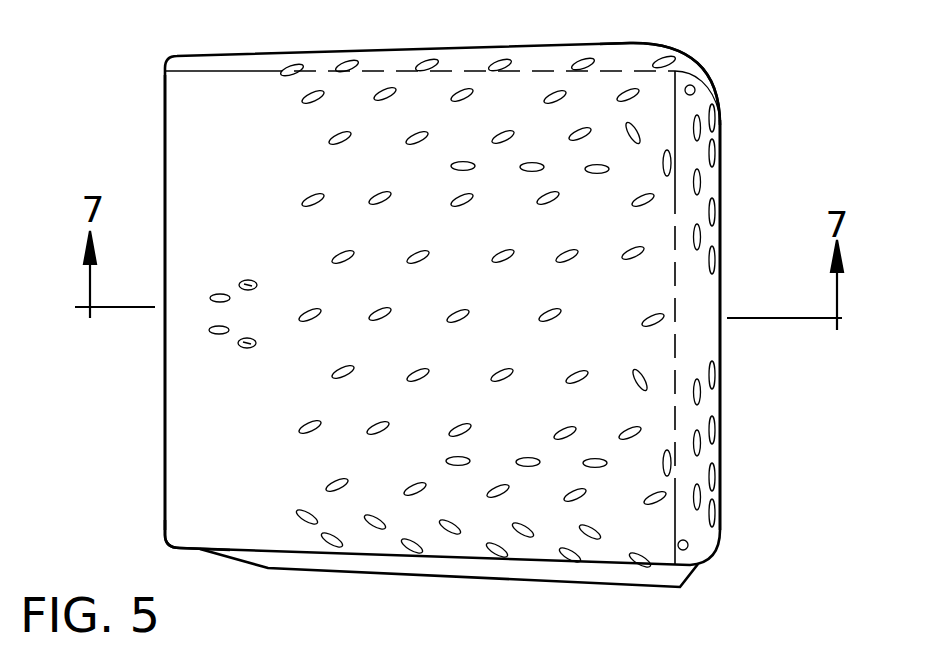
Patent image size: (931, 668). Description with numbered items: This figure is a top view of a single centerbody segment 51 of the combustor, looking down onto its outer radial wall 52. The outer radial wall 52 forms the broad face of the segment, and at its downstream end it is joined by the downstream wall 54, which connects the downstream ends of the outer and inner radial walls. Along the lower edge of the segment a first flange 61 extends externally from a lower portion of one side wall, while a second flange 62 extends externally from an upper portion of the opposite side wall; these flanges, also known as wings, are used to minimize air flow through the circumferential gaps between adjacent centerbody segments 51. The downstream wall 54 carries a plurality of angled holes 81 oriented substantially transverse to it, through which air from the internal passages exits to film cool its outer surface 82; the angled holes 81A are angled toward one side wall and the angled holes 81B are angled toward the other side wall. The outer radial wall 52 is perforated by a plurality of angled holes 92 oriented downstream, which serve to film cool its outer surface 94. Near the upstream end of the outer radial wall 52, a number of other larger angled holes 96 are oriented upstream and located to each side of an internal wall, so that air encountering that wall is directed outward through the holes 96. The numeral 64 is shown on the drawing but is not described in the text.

The centerbody segment 51 is at (141, 435).
The outer radial wall 52 is at (205, 500).
The downstream wall 54 is at (719, 340).
The first flange 61 is at (481, 572).
The second flange 62 is at (650, 50).
The left edge wall 64 is at (150, 147).
The angled holes 81 is at (698, 238).
The angled holes 81A is at (698, 495).
The angled holes 81B is at (698, 137).
The outer surface 82 is at (680, 312).
The angled holes 92 is at (545, 322).
The outer surface 94 is at (470, 293).
The larger angled holes 96 is at (250, 283).